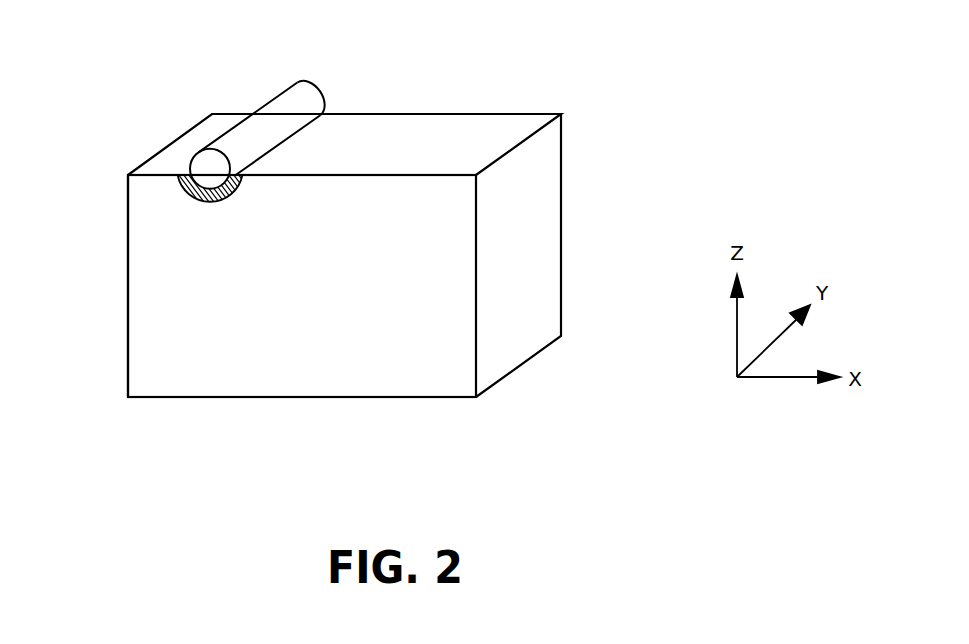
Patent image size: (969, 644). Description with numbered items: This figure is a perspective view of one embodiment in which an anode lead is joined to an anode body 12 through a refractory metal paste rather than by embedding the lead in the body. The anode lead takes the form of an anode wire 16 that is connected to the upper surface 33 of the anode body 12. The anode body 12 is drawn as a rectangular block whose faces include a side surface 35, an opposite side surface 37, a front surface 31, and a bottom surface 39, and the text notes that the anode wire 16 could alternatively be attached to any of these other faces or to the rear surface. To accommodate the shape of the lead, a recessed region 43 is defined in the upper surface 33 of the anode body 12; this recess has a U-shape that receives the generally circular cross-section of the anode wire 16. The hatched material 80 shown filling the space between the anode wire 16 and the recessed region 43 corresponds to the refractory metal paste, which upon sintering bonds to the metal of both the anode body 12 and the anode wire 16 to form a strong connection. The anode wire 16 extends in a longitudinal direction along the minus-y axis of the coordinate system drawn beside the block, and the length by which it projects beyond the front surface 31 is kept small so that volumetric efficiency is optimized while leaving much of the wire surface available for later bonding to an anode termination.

The anode body 12 is at (333, 259).
The anode wire 16 is at (310, 93).
The front surface 31 is at (316, 311).
The upper surface 33 is at (407, 130).
The side surface 35 is at (127, 302).
The side surface 37 is at (542, 205).
The bottom surface 39 is at (277, 397).
The recessed region 43 is at (188, 188).
The hatched bonding region 80 is at (214, 200).